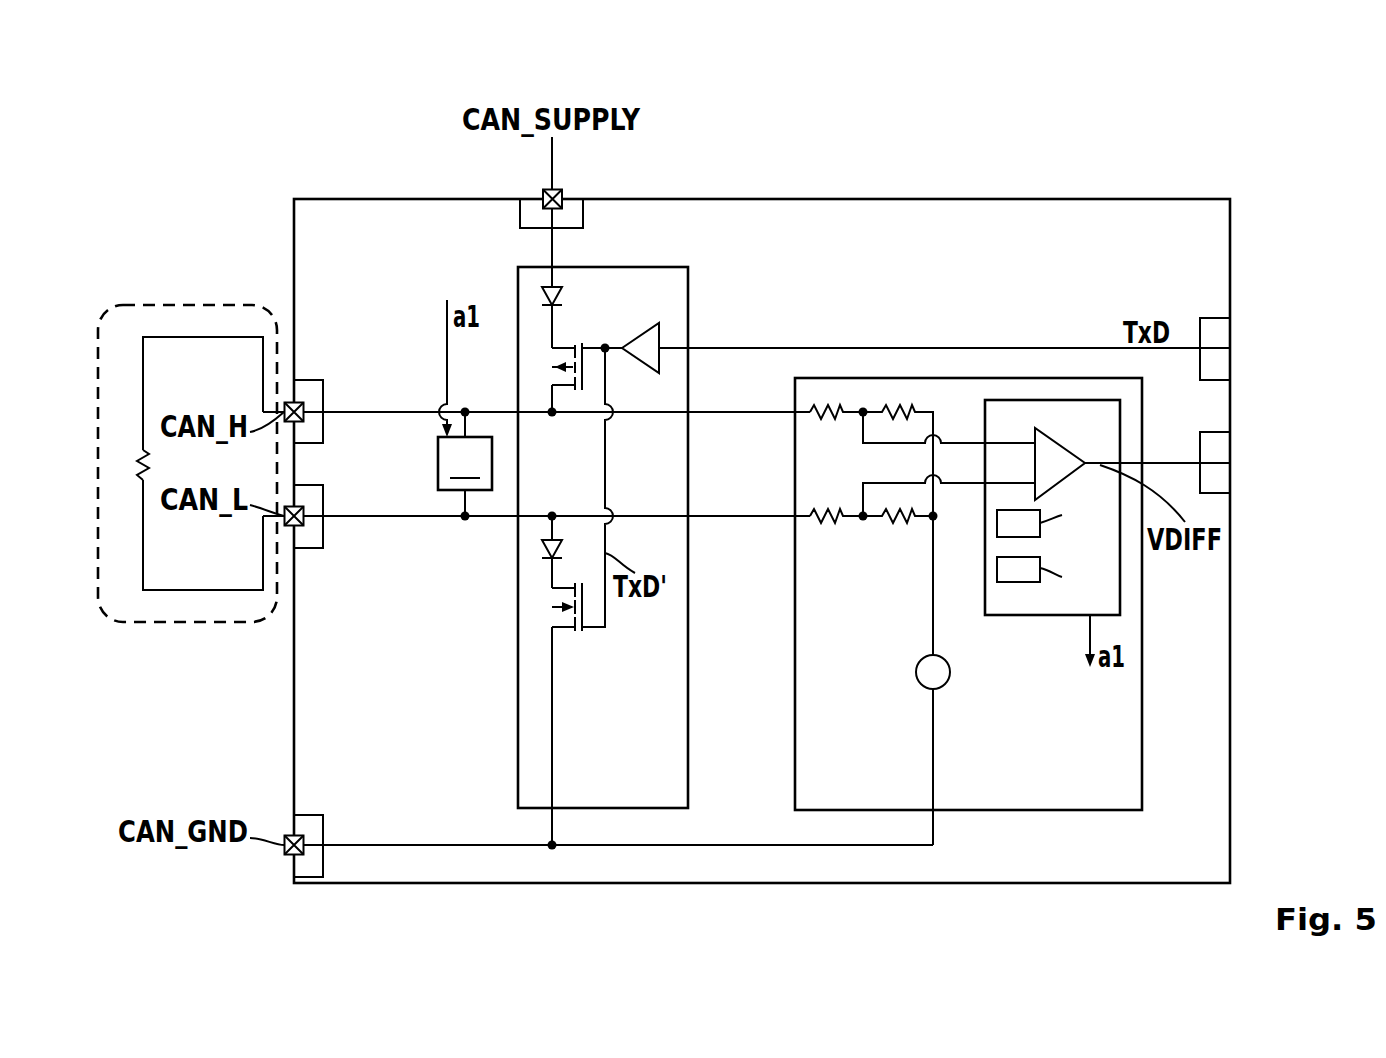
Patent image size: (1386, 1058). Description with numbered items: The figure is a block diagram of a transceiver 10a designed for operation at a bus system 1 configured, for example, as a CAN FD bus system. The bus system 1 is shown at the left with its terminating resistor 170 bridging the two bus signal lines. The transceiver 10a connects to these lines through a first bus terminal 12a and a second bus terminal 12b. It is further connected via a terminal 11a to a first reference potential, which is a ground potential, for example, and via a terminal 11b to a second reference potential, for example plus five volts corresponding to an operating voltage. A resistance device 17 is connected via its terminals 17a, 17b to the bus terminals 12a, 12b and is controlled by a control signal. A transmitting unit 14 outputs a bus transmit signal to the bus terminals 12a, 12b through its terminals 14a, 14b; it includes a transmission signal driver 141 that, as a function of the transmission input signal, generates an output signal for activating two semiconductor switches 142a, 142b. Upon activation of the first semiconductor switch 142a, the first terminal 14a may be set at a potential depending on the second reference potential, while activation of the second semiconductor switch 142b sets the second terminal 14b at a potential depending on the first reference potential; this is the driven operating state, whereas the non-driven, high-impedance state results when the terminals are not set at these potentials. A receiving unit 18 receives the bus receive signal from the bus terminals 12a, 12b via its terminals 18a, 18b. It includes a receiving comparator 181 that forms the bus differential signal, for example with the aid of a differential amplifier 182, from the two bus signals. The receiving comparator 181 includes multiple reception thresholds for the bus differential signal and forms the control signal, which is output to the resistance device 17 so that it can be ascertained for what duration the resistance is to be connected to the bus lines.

The transceiver device 10a is at (212, 128).
The bus system 1 is at (155, 431).
The terminating resistor 170 is at (128, 460).
The first bus terminal 12a is at (310, 380).
The second bus terminal 12b is at (310, 548).
The terminal 11a is at (310, 815).
The terminal 11b is at (583, 213).
The resistance device 17 is at (465, 464).
The terminal of resistance device 17a is at (465, 411).
The terminal of resistance device 17b is at (465, 516).
The transmitting unit 14 is at (688, 758).
The first terminal of transmitting unit 14a is at (552, 412).
The second terminal of transmitting unit 14b is at (552, 516).
The transmission signal driver 141 is at (660, 335).
The first semiconductor switch 142a is at (572, 336).
The second semiconductor switch 142b is at (573, 641).
The receiving unit 18 is at (795, 663).
The terminal of receiving unit 18a is at (863, 412).
The terminal of receiving unit 18b is at (863, 516).
The receiving comparator 181 is at (1010, 615).
The differential amplifier 182 is at (1095, 432).